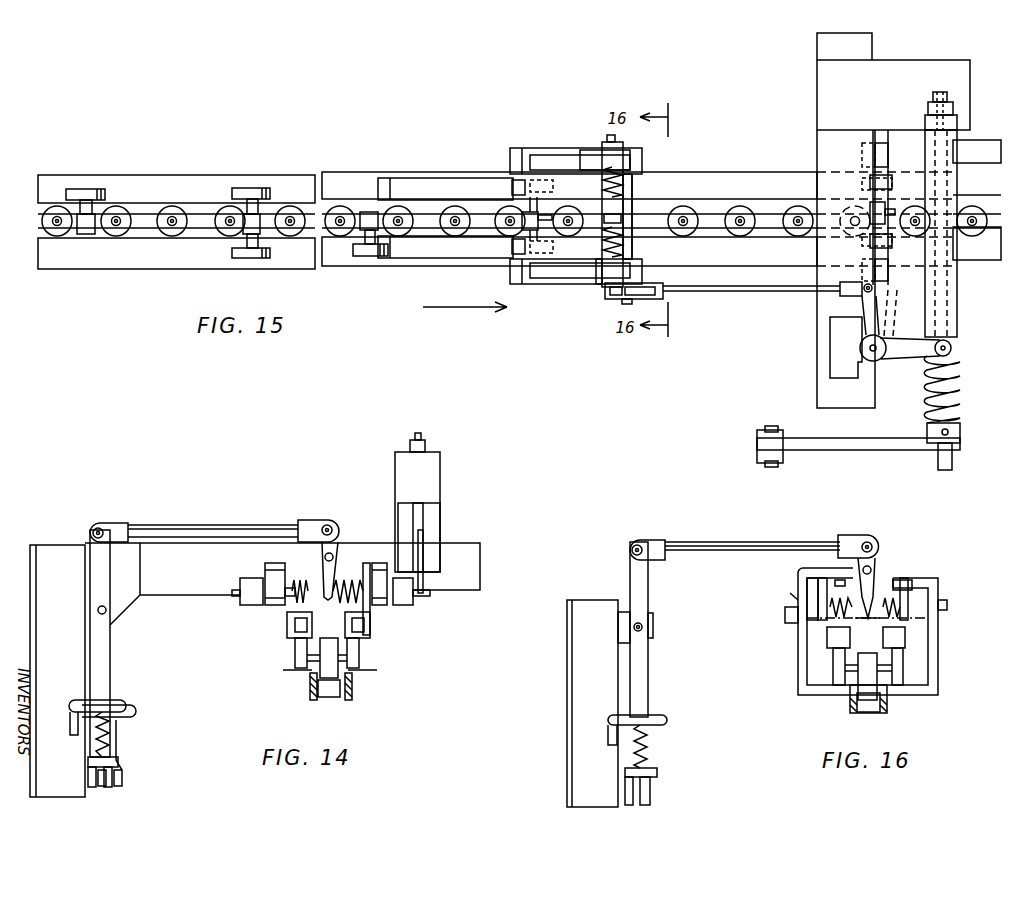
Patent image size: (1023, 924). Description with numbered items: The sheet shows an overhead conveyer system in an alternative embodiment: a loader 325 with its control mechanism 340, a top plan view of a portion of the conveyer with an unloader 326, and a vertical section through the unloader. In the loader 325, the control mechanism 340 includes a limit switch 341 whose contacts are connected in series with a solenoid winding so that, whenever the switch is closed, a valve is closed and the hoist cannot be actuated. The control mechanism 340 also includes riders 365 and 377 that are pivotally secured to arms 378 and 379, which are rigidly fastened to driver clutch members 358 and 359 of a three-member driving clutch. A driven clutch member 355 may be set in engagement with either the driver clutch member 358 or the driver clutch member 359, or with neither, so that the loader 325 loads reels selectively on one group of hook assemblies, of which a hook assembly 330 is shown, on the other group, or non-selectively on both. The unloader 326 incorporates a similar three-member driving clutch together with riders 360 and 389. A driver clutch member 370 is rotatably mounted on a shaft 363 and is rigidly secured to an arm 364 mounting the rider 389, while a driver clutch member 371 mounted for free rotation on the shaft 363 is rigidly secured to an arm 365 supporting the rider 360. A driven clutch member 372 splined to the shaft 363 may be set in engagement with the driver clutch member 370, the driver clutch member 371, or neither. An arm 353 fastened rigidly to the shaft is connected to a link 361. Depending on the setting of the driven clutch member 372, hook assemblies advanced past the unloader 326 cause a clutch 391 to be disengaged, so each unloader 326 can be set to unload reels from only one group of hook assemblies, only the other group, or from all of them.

In FIG. 14, the loader 325 is at (183, 489).
In FIG. 15, the unloader 326 is at (787, 308).
In FIG. 16, the unloader 326 is at (953, 567).
In FIG. 15, the hook assembly 330 is at (567, 180).
In FIG. 14, the hook assembly 330 is at (378, 668).
In FIG. 16, the hook assembly 330 is at (914, 667).
In FIG. 14, the control mechanism 340 is at (364, 466).
In FIG. 14, the limit switch 341 is at (440, 473).
In FIG. 15, the arm 353 is at (613, 296).
In FIG. 16, the arm 353 is at (792, 595).
In FIG. 14, the driven clutch member 355 is at (340, 585).
In FIG. 14, the driver clutch member 358 is at (280, 592).
In FIG. 14, the driver clutch member 359 is at (377, 593).
In FIG. 15, the rider 360 is at (460, 249).
In FIG. 16, the rider 360 is at (827, 632).
In FIG. 15, the link 361 is at (727, 293).
In FIG. 15, the shaft 363 is at (553, 184).
In FIG. 16, the shaft 363 is at (845, 613).
In FIG. 15, the arm 364 is at (530, 153).
In FIG. 16, the arm 364 is at (928, 585).
In FIG. 15, the rider / arm 365 is at (553, 279).
In FIG. 14, the rider / arm 365 is at (297, 617).
In FIG. 16, the rider / arm 365 is at (805, 582).
In FIG. 15, the driver clutch member 370 is at (607, 165).
In FIG. 16, the driver clutch member 370 is at (915, 600).
In FIG. 15, the driver clutch member 371 is at (610, 270).
In FIG. 16, the driver clutch member 371 is at (818, 602).
In FIG. 15, the spring bar 372 is at (608, 202).
In FIG. 16, the spring bar 372 is at (880, 598).
In FIG. 14, the rider 377 is at (362, 617).
In FIG. 14, the arm 378 is at (250, 577).
In FIG. 14, the arm 379 is at (387, 580).
In FIG. 15, the rider 389 is at (442, 187).
In FIG. 16, the rider 389 is at (897, 633).
In FIG. 15, the clutch 391 is at (965, 328).